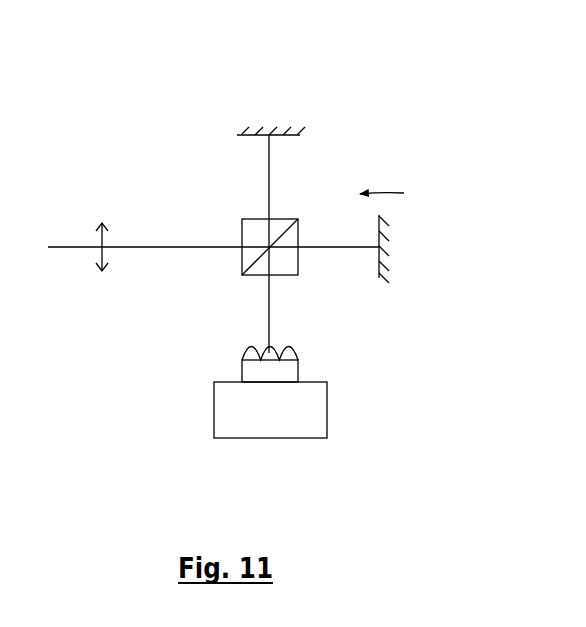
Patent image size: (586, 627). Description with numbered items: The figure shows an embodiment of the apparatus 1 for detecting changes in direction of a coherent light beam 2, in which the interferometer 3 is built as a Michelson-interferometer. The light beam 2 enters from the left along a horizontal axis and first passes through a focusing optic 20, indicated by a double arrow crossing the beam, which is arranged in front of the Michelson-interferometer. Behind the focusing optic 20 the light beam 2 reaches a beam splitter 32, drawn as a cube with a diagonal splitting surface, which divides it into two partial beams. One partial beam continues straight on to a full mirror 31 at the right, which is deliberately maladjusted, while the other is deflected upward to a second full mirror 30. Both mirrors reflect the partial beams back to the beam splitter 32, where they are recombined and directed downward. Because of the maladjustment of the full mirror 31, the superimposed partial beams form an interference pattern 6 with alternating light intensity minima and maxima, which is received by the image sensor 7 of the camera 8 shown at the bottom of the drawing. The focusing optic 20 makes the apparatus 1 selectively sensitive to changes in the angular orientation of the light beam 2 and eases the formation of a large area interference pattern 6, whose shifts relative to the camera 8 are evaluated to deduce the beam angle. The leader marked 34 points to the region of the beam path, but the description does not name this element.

The apparatus 1 is at (437, 137).
The light beam 2 is at (58, 243).
The interferometer 3 is at (360, 148).
The interference pattern 6 is at (297, 336).
The image sensor 7 is at (300, 365).
The camera 8 is at (328, 408).
The focusing optic 20 is at (99, 278).
The full mirror 30 is at (268, 124).
The full mirror 31 is at (391, 244).
The beam splitter 32 is at (243, 283).
The beam path 34 is at (197, 170).